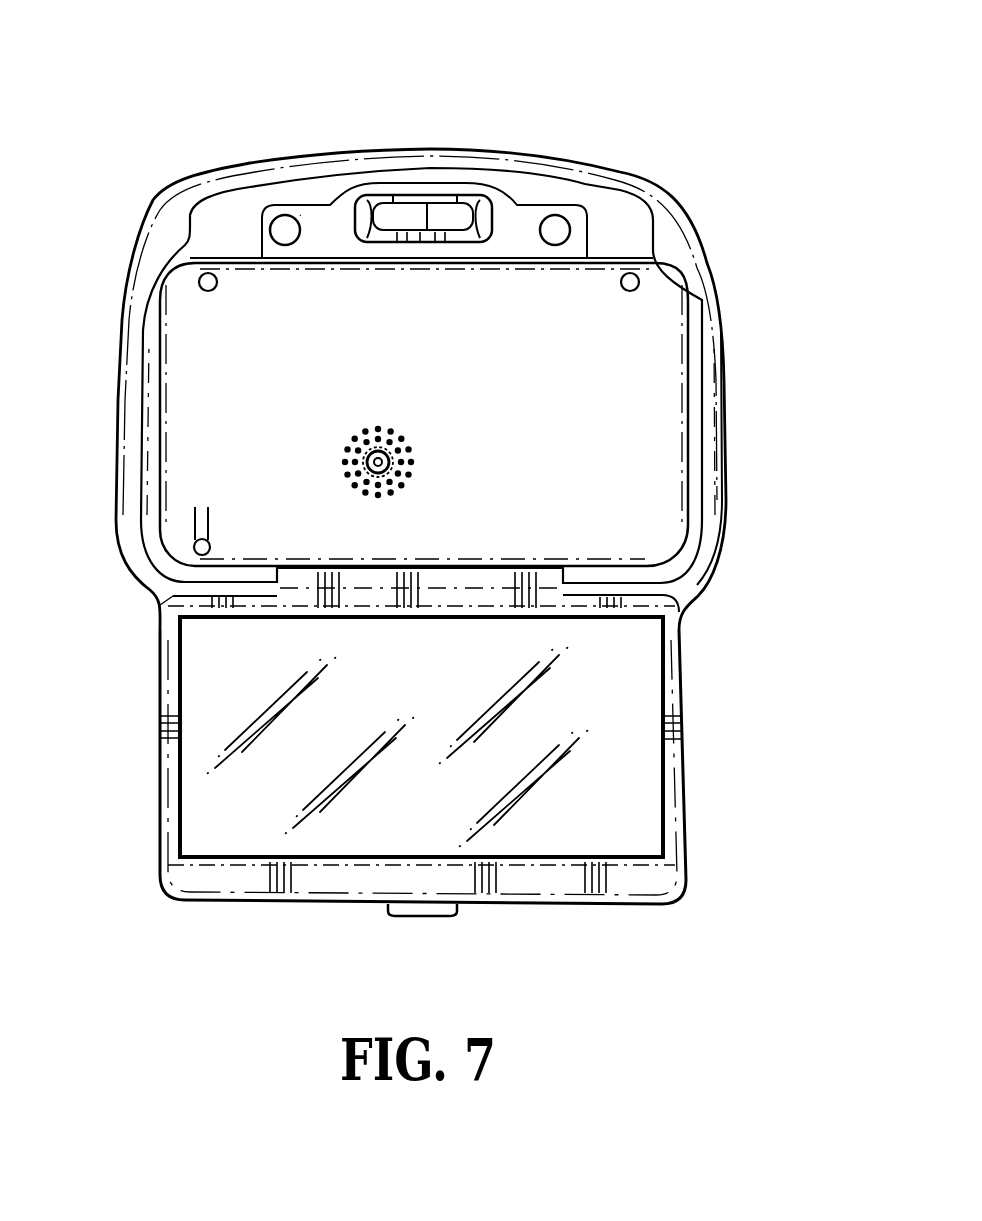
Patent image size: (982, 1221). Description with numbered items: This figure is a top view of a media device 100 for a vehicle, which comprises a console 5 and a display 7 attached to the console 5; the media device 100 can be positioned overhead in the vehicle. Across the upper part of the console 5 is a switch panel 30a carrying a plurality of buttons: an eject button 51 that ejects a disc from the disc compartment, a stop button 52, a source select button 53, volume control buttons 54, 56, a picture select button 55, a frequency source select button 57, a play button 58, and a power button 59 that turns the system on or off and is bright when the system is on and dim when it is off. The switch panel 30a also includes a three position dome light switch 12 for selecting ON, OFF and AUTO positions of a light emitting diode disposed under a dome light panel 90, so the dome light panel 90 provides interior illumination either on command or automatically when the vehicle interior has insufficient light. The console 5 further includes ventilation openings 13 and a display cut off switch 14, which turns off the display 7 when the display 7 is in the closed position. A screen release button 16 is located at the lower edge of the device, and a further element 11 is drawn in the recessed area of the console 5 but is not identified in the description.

The media device 100 is at (432, 501).
The console 5 is at (404, 323).
The display 7 is at (225, 700).
The recessed panel 11 is at (325, 243).
The three position dome light switch 12 is at (439, 178).
The ventilation openings 13 is at (352, 460).
The display cut off switch 14 is at (194, 546).
The screen release button 16 is at (404, 917).
The switch panel 30a is at (275, 214).
The eject button 51 is at (557, 229).
The stop button 52 is at (490, 210).
The source select button 53 is at (470, 205).
The volume control button 54 is at (453, 196).
The picture select button 55 is at (423, 203).
The volume control button 56 is at (393, 203).
The frequency source select button 57 is at (372, 215).
The play button 58 is at (308, 205).
The power button 59 is at (284, 229).
The dome light panel 90 is at (217, 232).